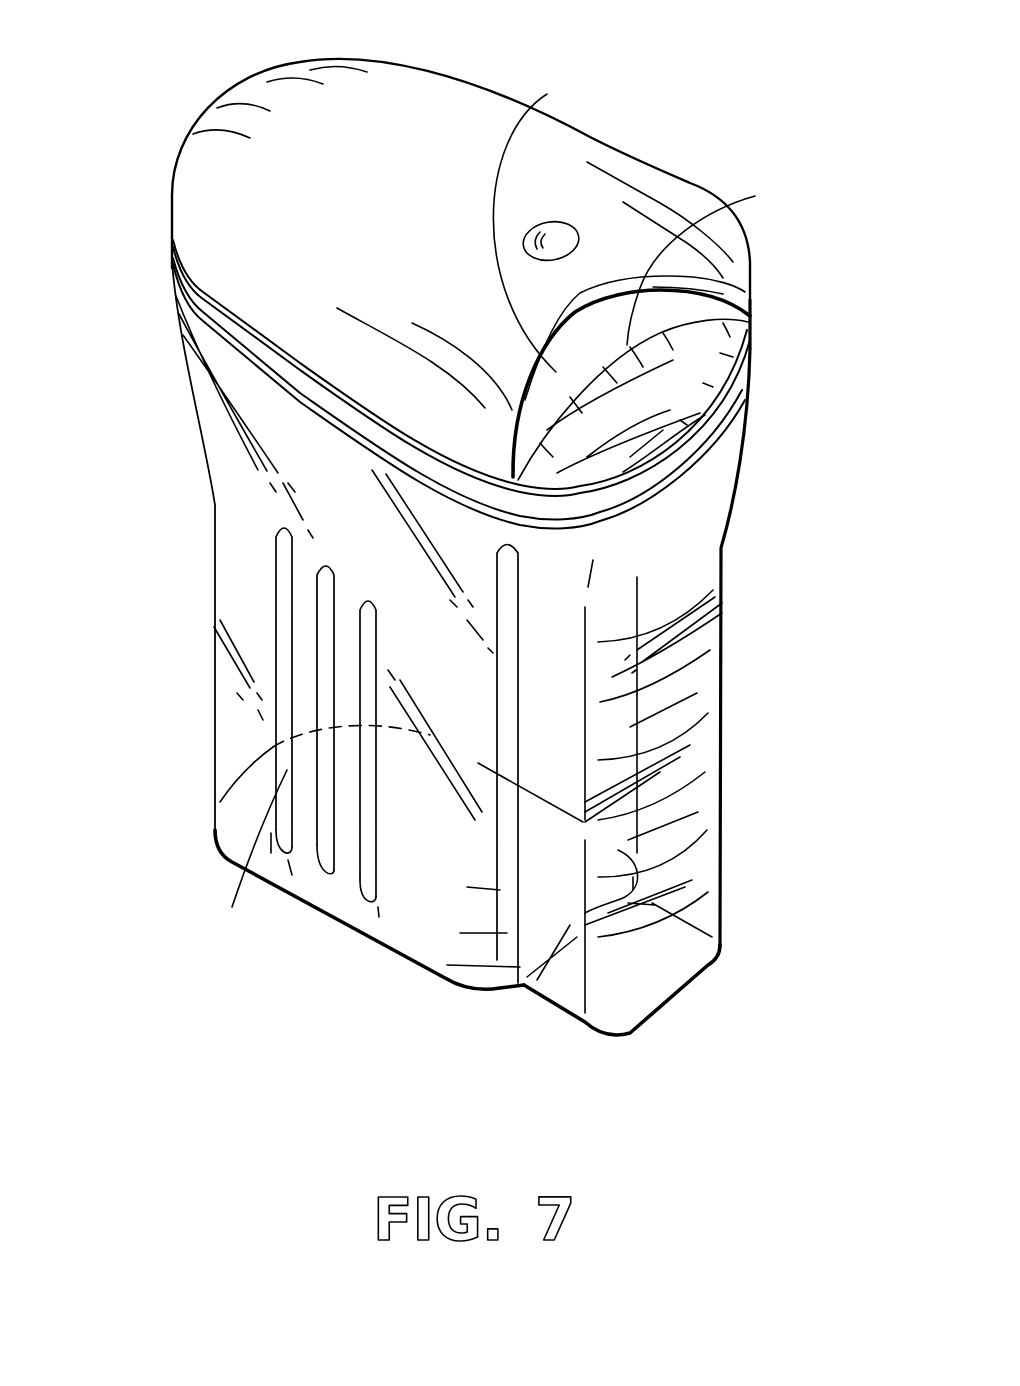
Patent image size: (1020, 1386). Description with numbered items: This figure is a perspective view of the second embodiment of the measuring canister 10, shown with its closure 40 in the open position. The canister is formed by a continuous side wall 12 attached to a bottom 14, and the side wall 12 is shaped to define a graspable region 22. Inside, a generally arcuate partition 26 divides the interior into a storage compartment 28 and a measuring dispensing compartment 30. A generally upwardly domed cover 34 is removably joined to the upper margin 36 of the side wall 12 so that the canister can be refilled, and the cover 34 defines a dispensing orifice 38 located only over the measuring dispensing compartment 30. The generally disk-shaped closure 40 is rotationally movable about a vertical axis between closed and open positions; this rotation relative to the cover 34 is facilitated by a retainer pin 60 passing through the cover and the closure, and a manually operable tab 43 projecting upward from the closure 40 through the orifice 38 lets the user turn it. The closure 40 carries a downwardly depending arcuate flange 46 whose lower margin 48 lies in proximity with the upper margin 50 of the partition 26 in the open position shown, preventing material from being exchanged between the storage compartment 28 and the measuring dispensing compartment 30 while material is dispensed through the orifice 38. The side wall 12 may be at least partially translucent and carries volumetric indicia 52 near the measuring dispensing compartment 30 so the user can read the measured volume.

The measuring canister 10 is at (790, 96).
The side wall 12 is at (214, 513).
The bottom 14 is at (363, 937).
The graspable region 22 is at (333, 765).
The partition 26 is at (508, 905).
The storage compartment 28 is at (232, 616).
The measuring dispensing compartment 30 is at (565, 905).
The cover 34 is at (406, 108).
The upper margin 36 is at (278, 386).
The dispensing orifice 38 is at (746, 362).
The closure 40 is at (537, 405).
The tab 43 is at (747, 264).
The flange 46 is at (538, 220).
The lower margin 48 is at (711, 262).
The upper margin 50 is at (637, 357).
The volumetric indicia 52 is at (697, 840).
The retainer pin 60 is at (548, 222).